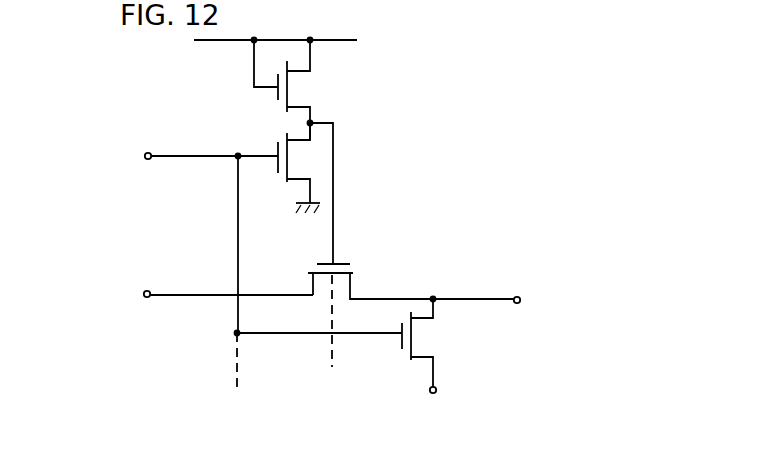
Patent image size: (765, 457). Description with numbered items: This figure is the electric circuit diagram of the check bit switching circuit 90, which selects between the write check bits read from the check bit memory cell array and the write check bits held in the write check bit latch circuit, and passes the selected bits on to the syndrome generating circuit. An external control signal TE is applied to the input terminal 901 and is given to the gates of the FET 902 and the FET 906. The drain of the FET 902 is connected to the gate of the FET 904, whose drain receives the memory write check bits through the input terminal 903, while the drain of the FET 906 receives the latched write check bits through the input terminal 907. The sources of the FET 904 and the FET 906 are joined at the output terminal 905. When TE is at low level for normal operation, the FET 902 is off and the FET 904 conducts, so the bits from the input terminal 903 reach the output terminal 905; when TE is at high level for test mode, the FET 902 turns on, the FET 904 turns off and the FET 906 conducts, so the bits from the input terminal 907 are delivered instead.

The check bit switching circuit 90 is at (393, 93).
The input terminal 901 is at (150, 152).
The FET 902 is at (275, 152).
The input terminal 903 is at (150, 290).
The FET 904 is at (343, 263).
The output terminal 905 is at (518, 295).
The FET 906 is at (400, 343).
The input terminal 907 is at (437, 388).